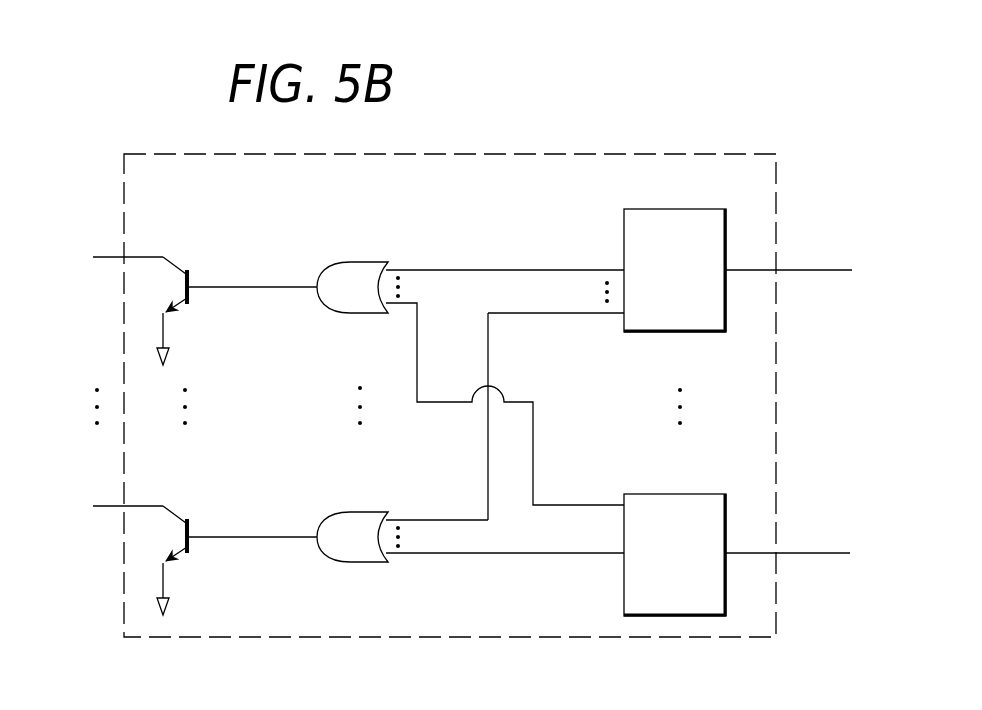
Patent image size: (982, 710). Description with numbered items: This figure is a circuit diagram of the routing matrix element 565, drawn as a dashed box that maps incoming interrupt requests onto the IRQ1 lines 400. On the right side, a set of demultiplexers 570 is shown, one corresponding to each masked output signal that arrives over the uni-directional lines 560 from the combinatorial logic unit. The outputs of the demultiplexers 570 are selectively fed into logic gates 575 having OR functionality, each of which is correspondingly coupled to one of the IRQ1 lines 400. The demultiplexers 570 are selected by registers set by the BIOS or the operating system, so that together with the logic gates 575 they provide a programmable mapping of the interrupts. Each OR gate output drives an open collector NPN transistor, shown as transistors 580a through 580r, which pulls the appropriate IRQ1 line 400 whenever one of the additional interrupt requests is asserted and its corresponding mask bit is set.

The routing matrix element 565 is at (706, 152).
The IRQ1 lines 400 is at (78, 288).
The NPN transistor 580a is at (195, 257).
The NPN transistor 580r is at (192, 569).
The logic gates 575 is at (336, 502).
The demultiplexers 570 is at (635, 350).
The uni-directional lines 560 is at (817, 256).